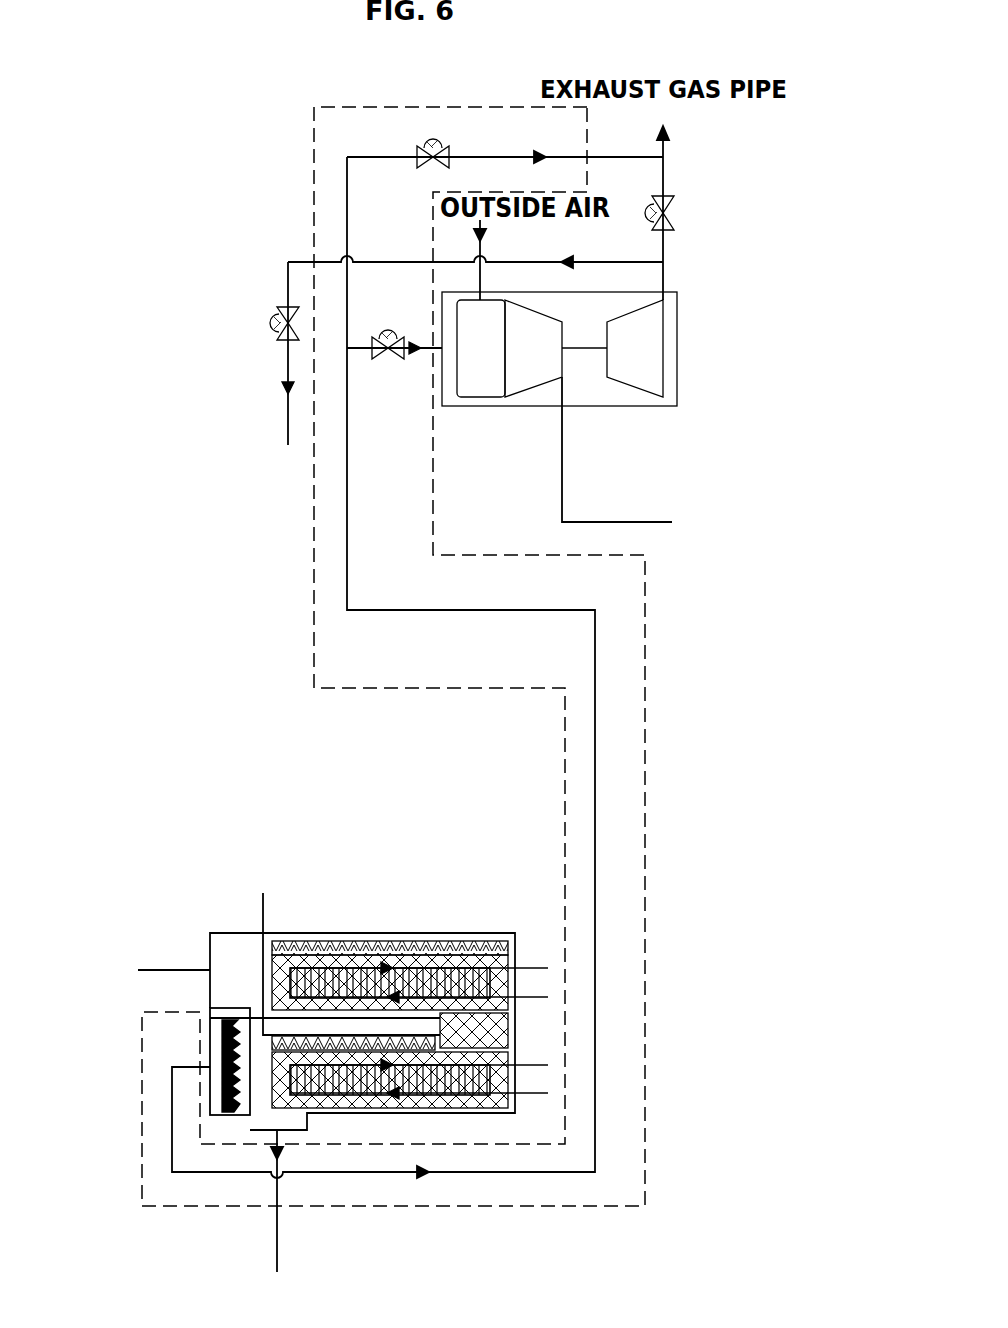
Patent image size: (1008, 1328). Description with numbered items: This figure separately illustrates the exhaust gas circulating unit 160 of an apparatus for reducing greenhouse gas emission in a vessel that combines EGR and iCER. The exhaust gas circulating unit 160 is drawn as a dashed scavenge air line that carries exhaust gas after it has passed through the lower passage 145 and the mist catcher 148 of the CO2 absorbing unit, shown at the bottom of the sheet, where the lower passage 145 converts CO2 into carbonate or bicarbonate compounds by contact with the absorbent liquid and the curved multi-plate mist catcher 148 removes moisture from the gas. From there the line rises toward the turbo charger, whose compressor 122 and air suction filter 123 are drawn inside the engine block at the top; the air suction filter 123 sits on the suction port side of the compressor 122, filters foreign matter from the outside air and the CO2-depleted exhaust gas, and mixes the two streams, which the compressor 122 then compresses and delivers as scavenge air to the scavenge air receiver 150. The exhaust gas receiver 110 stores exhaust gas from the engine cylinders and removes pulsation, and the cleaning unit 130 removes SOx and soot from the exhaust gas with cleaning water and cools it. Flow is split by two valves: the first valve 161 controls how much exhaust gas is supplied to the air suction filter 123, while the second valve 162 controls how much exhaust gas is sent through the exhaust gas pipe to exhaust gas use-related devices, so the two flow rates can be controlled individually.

The exhaust gas receiver 110 is at (607, 377).
The compressor 122 is at (533, 348).
The air suction filter 123 is at (481, 348).
The cleaning unit 130 is at (306, 481).
The lower passage 145 is at (207, 1077).
The mist catcher 148 is at (205, 1025).
The scavenge air receiver 150 is at (728, 534).
The exhaust gas circulating unit 160 is at (700, 837).
The first valve 161 is at (394, 334).
The second valve 162 is at (438, 141).